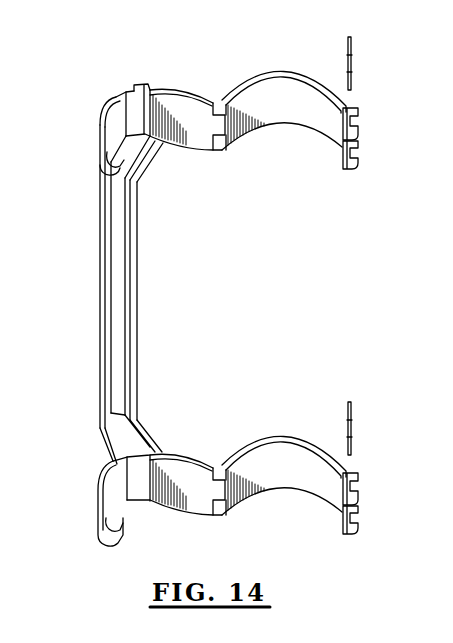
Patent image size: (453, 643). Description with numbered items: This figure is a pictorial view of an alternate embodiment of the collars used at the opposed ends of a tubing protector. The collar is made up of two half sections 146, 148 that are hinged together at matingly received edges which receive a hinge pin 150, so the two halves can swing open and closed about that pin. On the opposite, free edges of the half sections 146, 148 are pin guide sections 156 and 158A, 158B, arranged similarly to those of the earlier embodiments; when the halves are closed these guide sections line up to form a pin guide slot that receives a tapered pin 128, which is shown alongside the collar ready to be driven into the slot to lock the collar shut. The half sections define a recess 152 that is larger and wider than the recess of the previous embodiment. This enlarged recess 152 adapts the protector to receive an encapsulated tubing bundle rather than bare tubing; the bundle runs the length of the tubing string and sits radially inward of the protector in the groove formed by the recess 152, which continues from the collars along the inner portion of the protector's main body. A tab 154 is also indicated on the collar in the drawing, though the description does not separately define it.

The tapered pin 128 is at (352, 49).
The half section 146 is at (100, 136).
The half section 148 is at (270, 437).
The hinge pin 150 is at (218, 102).
The recess 152 is at (118, 94).
The tab 154 is at (143, 86).
The pin guide section 156 is at (106, 176).
The pin guide section 158A is at (359, 122).
The pin guide section 158B is at (359, 156).